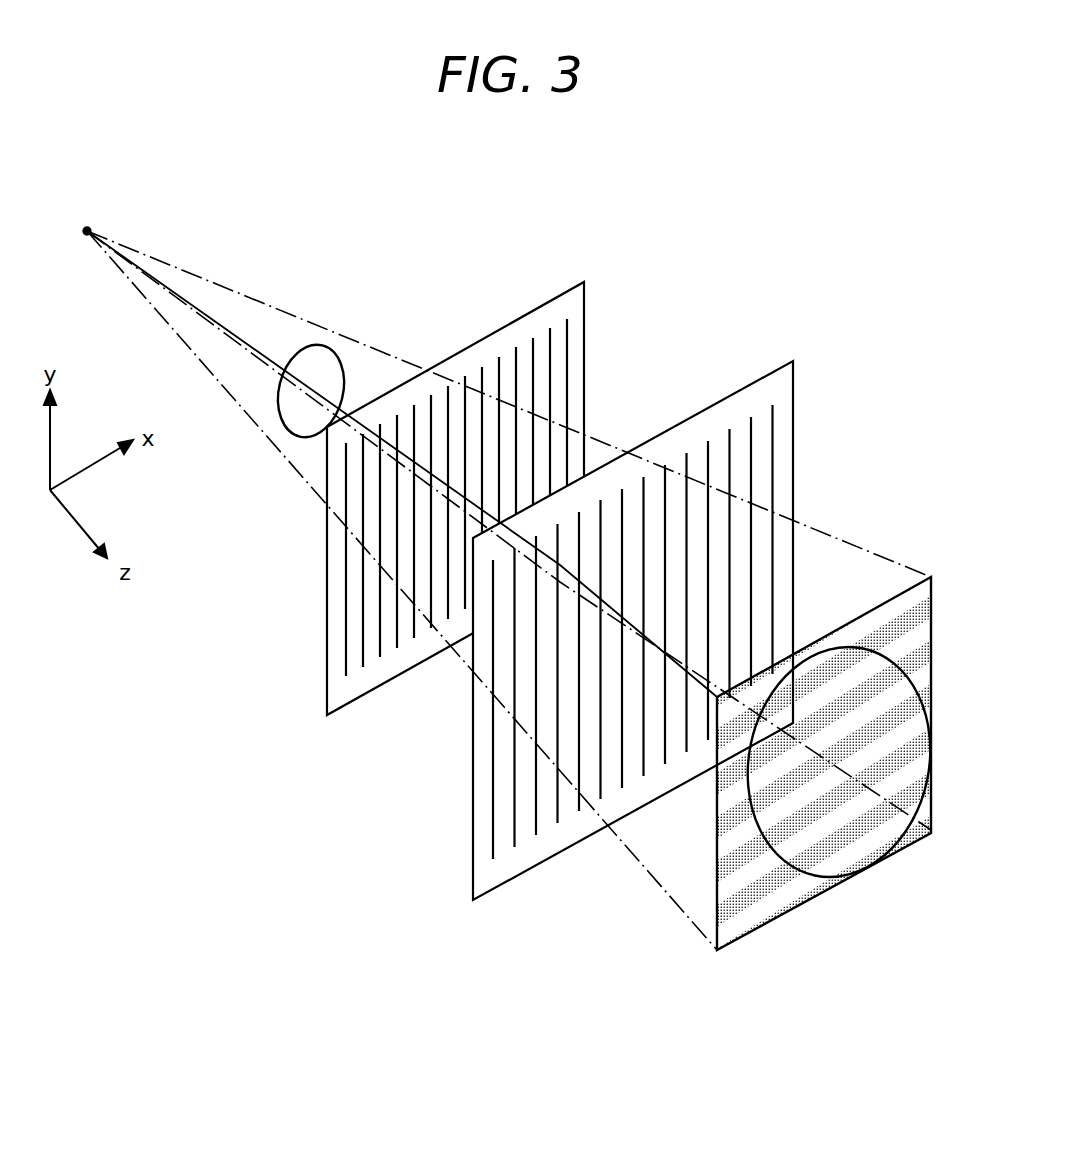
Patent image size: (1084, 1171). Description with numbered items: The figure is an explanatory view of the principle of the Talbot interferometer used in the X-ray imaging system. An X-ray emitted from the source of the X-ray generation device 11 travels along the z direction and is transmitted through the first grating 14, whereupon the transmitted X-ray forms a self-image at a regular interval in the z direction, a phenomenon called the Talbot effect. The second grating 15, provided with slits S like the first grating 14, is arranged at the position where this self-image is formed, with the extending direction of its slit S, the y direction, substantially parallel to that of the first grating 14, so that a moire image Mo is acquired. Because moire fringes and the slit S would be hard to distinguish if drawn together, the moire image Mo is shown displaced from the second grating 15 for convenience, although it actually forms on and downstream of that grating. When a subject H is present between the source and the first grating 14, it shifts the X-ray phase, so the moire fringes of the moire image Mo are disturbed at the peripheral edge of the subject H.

The X-ray generation device 11 is at (88, 230).
The first grating 14 is at (509, 323).
The second grating 15 is at (718, 398).
The subject H is at (328, 348).
The slit S is at (753, 470).
The moire image Mo is at (933, 648).